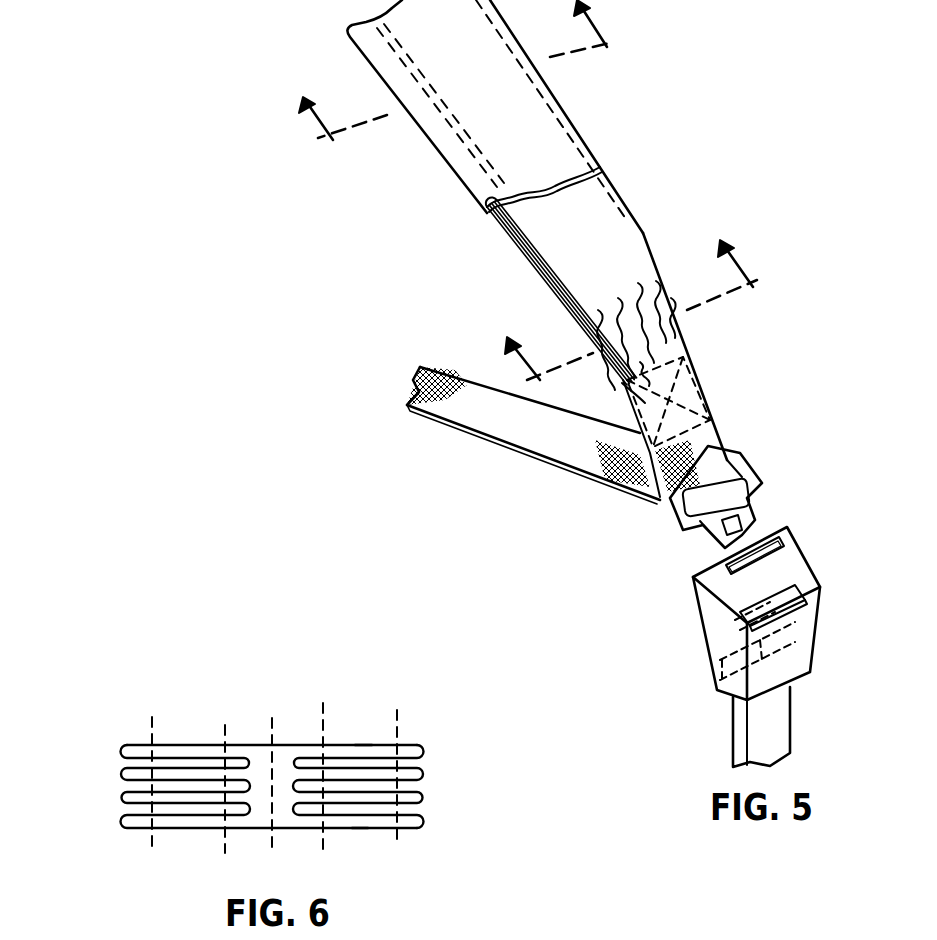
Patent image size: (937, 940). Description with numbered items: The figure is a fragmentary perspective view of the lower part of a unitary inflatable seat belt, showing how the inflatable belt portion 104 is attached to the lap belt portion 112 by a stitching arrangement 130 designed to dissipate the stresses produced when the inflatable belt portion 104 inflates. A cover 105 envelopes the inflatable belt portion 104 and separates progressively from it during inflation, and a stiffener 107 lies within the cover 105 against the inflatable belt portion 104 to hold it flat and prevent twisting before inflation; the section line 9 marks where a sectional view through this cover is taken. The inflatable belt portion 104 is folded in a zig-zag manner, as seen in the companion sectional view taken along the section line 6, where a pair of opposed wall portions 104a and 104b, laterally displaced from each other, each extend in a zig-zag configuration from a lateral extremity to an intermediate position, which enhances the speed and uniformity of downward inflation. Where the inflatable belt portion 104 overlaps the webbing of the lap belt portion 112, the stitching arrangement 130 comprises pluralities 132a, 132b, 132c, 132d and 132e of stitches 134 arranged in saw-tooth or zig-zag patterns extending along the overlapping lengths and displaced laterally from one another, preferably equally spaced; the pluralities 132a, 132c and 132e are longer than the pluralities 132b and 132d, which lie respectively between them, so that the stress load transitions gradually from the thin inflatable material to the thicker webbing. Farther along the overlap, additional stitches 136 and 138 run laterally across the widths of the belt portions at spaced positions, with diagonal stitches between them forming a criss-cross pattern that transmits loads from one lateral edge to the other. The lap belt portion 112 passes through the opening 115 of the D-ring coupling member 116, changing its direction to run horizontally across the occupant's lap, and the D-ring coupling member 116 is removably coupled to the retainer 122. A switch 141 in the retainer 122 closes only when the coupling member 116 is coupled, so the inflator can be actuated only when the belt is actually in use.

In FIG. 5, the section line 6— 6 is at (623, 310).
In FIG. 5, the section line 9— 9 is at (451, 76).
In FIG. 6, the inflatable belt portion 104 is at (425, 795).
In FIG. 6, the wall portion 104a is at (360, 828).
In FIG. 6, the wall portion 104b is at (363, 745).
In FIG. 5, the cover 105 is at (563, 93).
In FIG. 5, the stiffener 107 is at (455, 168).
In FIG. 5, the lap belt portion 112 is at (467, 410).
In FIG. 5, the opening 115 is at (707, 523).
In FIG. 5, the D-ring coupling member 116 is at (747, 453).
In FIG. 5, the retainer 122 is at (707, 607).
In FIG. 5, the stitching arrangement 130 is at (756, 325).
In FIG. 5, the plurality of stitches 132a is at (677, 320).
In FIG. 6, the plurality of stitches 132a is at (397, 745).
In FIG. 5, the plurality of stitches 132b is at (623, 317).
In FIG. 6, the plurality of stitches 132b is at (323, 745).
In FIG. 5, the plurality of stitches 132c is at (667, 343).
In FIG. 6, the plurality of stitches 132c is at (272, 745).
In FIG. 5, the plurality of stitches 132d is at (627, 383).
In FIG. 6, the plurality of stitches 132d is at (225, 745).
In FIG. 5, the plurality of stitches 132e is at (600, 313).
In FIG. 6, the plurality of stitches 132e is at (150, 745).
In FIG. 5, the stitches 134 is at (596, 292).
In FIG. 5, the additional stitches 136 is at (650, 370).
In FIG. 5, the additional stitches 138 is at (680, 440).
In FIG. 5, the switch 141 is at (720, 668).